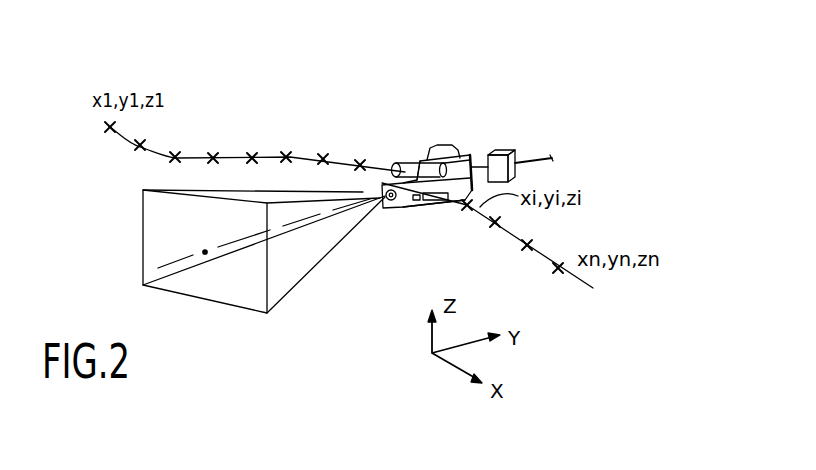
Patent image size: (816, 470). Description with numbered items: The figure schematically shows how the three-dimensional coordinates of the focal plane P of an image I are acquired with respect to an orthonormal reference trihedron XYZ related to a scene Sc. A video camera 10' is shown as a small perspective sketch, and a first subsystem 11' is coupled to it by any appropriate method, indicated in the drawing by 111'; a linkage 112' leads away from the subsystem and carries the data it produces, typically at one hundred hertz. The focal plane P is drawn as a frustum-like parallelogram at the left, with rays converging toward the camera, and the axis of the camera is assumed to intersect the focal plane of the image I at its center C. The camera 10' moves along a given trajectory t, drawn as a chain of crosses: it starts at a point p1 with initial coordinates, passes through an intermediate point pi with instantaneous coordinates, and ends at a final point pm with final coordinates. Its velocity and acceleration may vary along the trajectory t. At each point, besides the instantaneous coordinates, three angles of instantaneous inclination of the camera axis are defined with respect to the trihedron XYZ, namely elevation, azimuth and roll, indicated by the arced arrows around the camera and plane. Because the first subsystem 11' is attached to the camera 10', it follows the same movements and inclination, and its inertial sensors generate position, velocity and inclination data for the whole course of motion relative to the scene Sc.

The video camera 10' is at (427, 134).
The first subsystem 11' is at (506, 122).
The coupling of the first subsystem to the video camera 111' is at (459, 147).
The linkage 112' is at (542, 133).
The scene Sc is at (605, 378).
The initial point of the trajectory p1 is at (107, 130).
The intermediate point of the trajectory pi is at (440, 211).
The final point of the trajectory pm is at (553, 270).
The trajectory t is at (538, 258).
The image I is at (155, 205).
The focal plane P is at (143, 266).
The center of the focal plane C is at (203, 252).